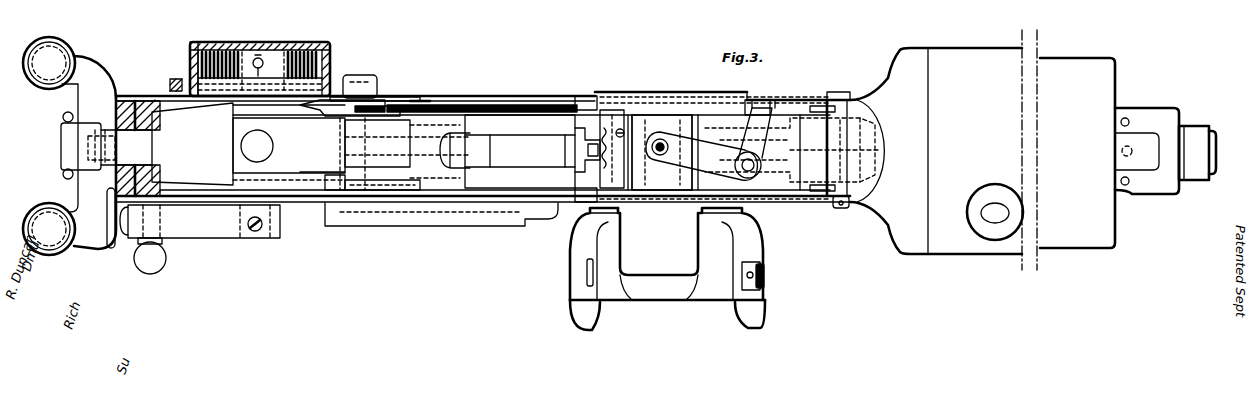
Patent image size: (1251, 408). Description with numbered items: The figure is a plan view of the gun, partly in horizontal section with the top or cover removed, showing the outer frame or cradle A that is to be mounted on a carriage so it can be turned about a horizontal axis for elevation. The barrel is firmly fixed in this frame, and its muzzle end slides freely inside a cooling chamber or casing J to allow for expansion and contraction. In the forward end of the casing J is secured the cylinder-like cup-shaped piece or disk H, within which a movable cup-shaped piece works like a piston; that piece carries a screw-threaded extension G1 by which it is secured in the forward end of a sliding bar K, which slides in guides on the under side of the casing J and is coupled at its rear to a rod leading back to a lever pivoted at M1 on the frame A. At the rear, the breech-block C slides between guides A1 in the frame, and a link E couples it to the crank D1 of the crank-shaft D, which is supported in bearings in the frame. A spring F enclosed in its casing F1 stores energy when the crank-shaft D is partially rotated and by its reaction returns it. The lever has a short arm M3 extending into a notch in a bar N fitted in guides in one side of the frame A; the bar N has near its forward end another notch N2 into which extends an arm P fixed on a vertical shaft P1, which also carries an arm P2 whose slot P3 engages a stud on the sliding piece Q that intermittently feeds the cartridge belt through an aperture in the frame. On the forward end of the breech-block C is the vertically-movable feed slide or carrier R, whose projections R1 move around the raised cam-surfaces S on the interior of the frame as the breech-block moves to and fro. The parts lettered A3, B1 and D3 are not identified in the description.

The outer frame or cradle A is at (800, 204).
The guides A1 is at (488, 106).
The lower frame piece A3 is at (441, 213).
The wedge block B1 is at (348, 142).
The breech-block C is at (520, 151).
The crank-shaft D is at (280, 217).
The crank D1 is at (299, 154).
The lower block projection D3 is at (200, 239).
The link E is at (377, 143).
The spring F is at (330, 56).
The casing F1 is at (190, 56).
The pivot M1 is at (360, 85).
The short arm M3 is at (392, 106).
The bar N is at (420, 98).
The notch N2 is at (765, 108).
The raised cam-surfaces S is at (430, 132).
The feed slide or carrier R is at (612, 149).
The projections R1 is at (580, 104).
The sliding piece Q is at (662, 152).
The arm P is at (755, 134).
The vertical shaft P1 is at (748, 165).
The arm P2 is at (702, 156).
The slot P3 is at (672, 149).
The cooling chamber or casing J is at (982, 150).
The cup-shaped piece or disk H is at (1147, 151).
The sliding bar K is at (1194, 153).
The screw-threaded extension G1 is at (1214, 146).